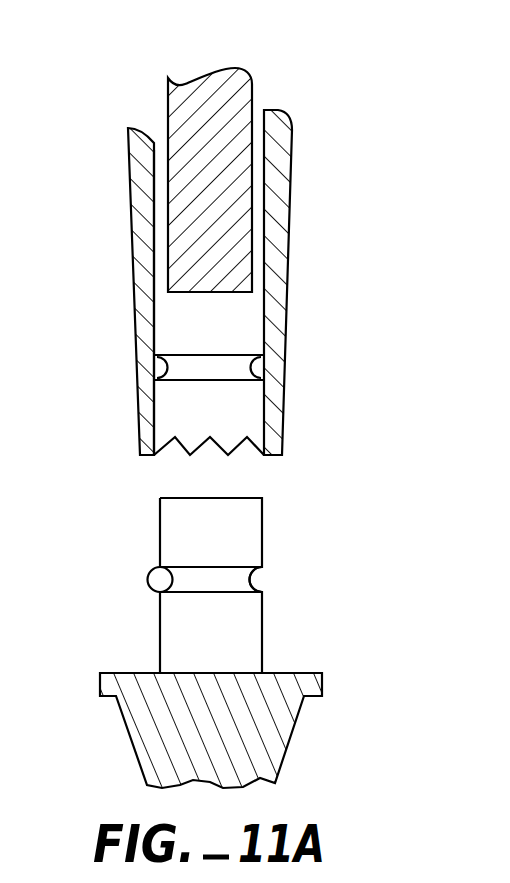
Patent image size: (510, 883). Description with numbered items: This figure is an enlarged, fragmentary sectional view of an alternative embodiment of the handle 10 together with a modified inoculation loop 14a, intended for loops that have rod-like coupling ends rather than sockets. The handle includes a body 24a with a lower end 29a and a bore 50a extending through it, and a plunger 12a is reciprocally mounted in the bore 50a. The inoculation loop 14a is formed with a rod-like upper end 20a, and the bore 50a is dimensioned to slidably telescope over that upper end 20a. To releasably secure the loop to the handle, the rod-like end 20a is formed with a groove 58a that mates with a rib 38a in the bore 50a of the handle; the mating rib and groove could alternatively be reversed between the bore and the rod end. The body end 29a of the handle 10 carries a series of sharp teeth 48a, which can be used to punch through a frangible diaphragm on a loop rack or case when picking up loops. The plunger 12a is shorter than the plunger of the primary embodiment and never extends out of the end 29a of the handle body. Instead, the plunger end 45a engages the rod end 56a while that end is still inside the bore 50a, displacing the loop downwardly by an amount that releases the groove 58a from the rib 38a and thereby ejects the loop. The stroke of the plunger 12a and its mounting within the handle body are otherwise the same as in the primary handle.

The handle 10 is at (355, 204).
The plunger 12a is at (252, 90).
The inoculation loop 14a is at (117, 736).
The rod-like upper end 20a is at (264, 550).
The body 24a is at (138, 182).
The lower end 29a is at (290, 278).
The rib 38a is at (216, 357).
The plunger end 45a is at (192, 294).
The sharp teeth 48a is at (228, 454).
The bore 50a is at (158, 250).
The rod end 56a is at (238, 496).
The groove 58a is at (172, 578).